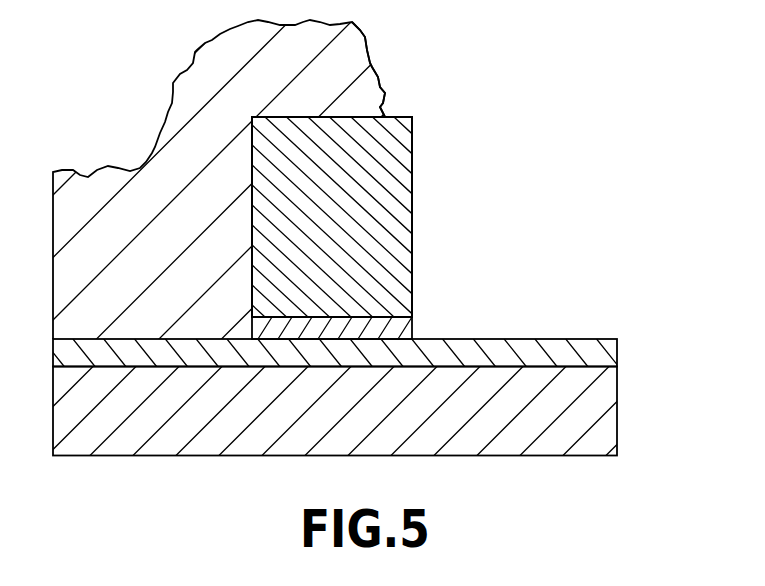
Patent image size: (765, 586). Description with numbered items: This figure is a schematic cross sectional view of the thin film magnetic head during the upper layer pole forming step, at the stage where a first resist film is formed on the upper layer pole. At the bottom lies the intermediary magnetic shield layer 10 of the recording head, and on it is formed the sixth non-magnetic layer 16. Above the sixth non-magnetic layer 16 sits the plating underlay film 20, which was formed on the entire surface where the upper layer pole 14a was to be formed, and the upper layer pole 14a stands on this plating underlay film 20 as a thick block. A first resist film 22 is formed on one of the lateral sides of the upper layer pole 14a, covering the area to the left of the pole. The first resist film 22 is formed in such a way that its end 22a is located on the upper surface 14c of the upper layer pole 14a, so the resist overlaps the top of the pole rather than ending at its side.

The intermediary magnetic shield layer 10 is at (597, 403).
The sixth non-magnetic layer 16 is at (600, 351).
The plating underlay film 20 is at (390, 328).
The upper layer pole 14a is at (373, 213).
The upper surface of the upper layer pole 14c is at (268, 112).
The first resist film 22 is at (352, 48).
The end of the first resist film 22a is at (386, 116).